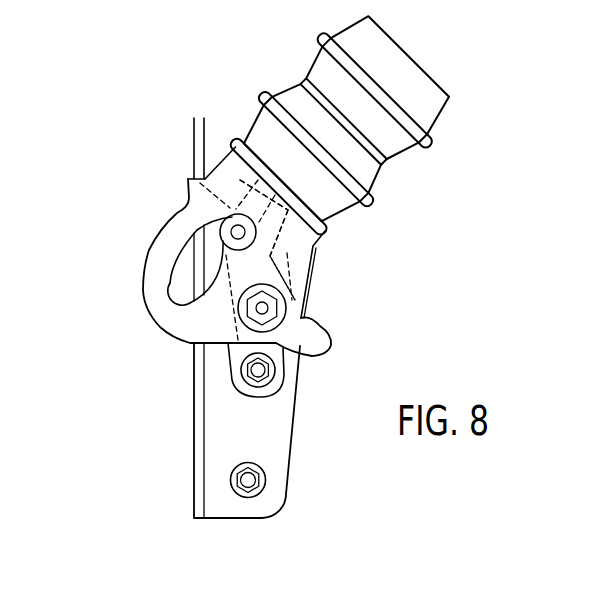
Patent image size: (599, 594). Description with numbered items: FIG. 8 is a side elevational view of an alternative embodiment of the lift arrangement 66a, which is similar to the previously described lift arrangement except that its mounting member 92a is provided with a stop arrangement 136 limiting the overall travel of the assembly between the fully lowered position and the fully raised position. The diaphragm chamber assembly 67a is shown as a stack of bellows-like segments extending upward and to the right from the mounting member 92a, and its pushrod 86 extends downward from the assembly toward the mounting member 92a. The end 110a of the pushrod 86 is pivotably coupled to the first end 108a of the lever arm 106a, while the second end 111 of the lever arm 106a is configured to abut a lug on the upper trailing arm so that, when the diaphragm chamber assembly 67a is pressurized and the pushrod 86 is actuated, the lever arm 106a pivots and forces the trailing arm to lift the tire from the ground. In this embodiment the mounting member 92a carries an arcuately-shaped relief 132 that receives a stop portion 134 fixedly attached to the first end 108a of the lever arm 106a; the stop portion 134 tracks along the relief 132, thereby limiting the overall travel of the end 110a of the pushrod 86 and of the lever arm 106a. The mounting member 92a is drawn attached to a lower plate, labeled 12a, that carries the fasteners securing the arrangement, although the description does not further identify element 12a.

The lift arrangement 66a is at (163, 137).
The diaphragm chamber assembly 67a is at (446, 87).
The pushrod 86 is at (240, 212).
The end of the pushrod 110a is at (192, 176).
The stop portion 134 is at (223, 222).
The mounting member 92a is at (149, 249).
The relief 132 is at (171, 279).
The stop arrangement 136 is at (164, 294).
The first end of the lever arm 108a is at (272, 258).
The lever arm 106a is at (292, 279).
The second end of the lever arm 111 is at (315, 333).
The side plate 12a is at (192, 440).